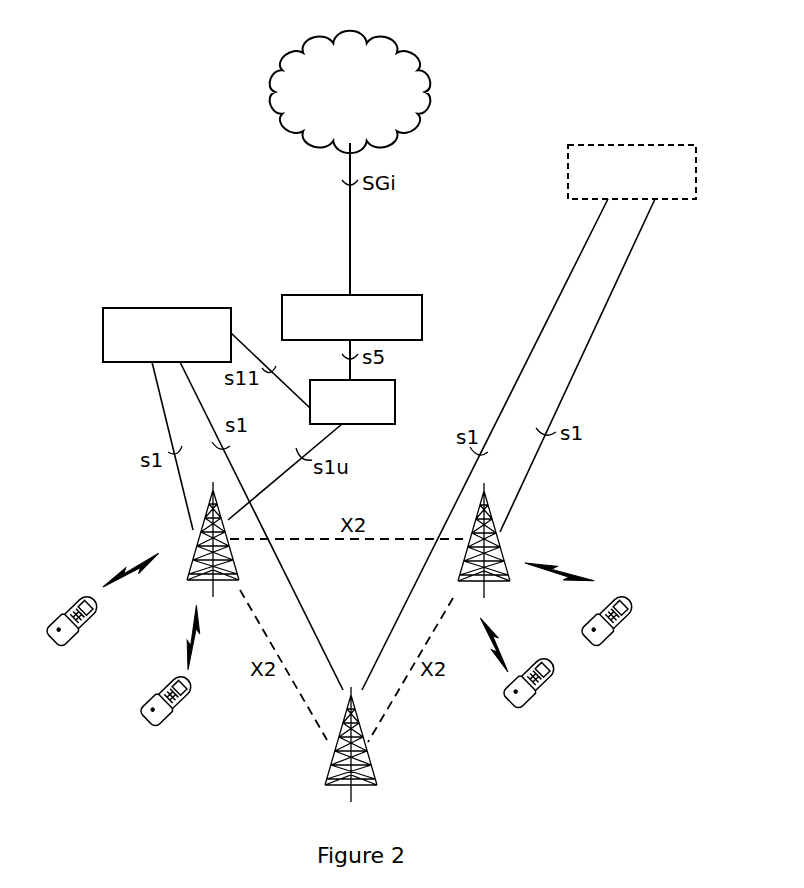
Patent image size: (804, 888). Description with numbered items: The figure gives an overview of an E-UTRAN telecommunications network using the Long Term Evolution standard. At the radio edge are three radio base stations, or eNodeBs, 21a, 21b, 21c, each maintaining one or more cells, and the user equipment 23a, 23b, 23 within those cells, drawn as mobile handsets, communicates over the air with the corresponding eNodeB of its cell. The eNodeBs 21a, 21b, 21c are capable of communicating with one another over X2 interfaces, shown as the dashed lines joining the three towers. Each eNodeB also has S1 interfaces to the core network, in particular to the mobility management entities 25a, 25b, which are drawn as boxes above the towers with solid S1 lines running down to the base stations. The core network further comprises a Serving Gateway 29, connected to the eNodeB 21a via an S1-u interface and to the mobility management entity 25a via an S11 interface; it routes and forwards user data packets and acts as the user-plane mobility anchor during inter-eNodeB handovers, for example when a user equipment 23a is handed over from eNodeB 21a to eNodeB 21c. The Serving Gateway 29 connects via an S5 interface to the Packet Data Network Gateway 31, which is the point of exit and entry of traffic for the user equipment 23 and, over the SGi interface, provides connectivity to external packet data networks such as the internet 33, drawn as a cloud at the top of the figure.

The internet 33 is at (402, 55).
The Packet Data Network Gateway 31 is at (422, 313).
The Serving Gateway 29 is at (395, 403).
The mobility management entity 25a is at (139, 308).
The mobility management entity 25b is at (668, 145).
The radio base station 21a is at (200, 552).
The radio base station 21b is at (498, 552).
The radio base station 21c is at (365, 758).
The user equipment 23a is at (62, 622).
The user equipment 23b is at (168, 722).
The user equipment 23 is at (603, 645).